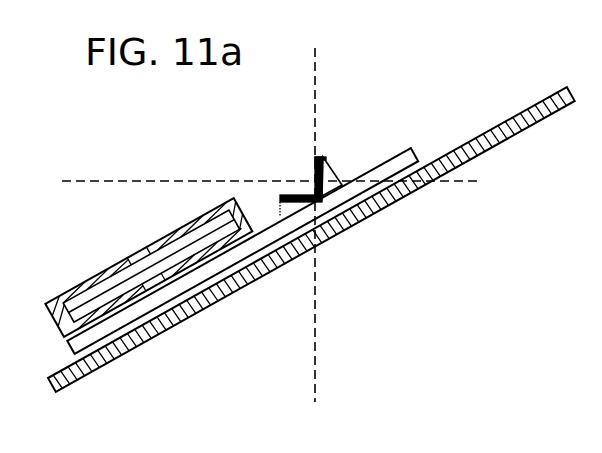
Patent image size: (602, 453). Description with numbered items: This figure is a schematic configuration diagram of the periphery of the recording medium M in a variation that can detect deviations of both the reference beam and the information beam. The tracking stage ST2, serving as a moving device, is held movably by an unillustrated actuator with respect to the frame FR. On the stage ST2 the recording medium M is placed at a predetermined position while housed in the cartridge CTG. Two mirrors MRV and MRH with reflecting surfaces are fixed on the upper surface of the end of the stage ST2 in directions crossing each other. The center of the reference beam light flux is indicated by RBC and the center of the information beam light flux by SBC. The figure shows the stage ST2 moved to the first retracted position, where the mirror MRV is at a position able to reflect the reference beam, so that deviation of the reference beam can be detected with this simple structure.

The frame FR is at (248, 278).
The tracking stage ST2 is at (165, 298).
The cartridge CTG is at (70, 292).
The recording medium M is at (196, 238).
The mirror MRH is at (283, 195).
The mirror MRV is at (313, 166).
The center of light flux of information beam SBC is at (314, 87).
The center of light flux of reference beam RBC is at (91, 181).